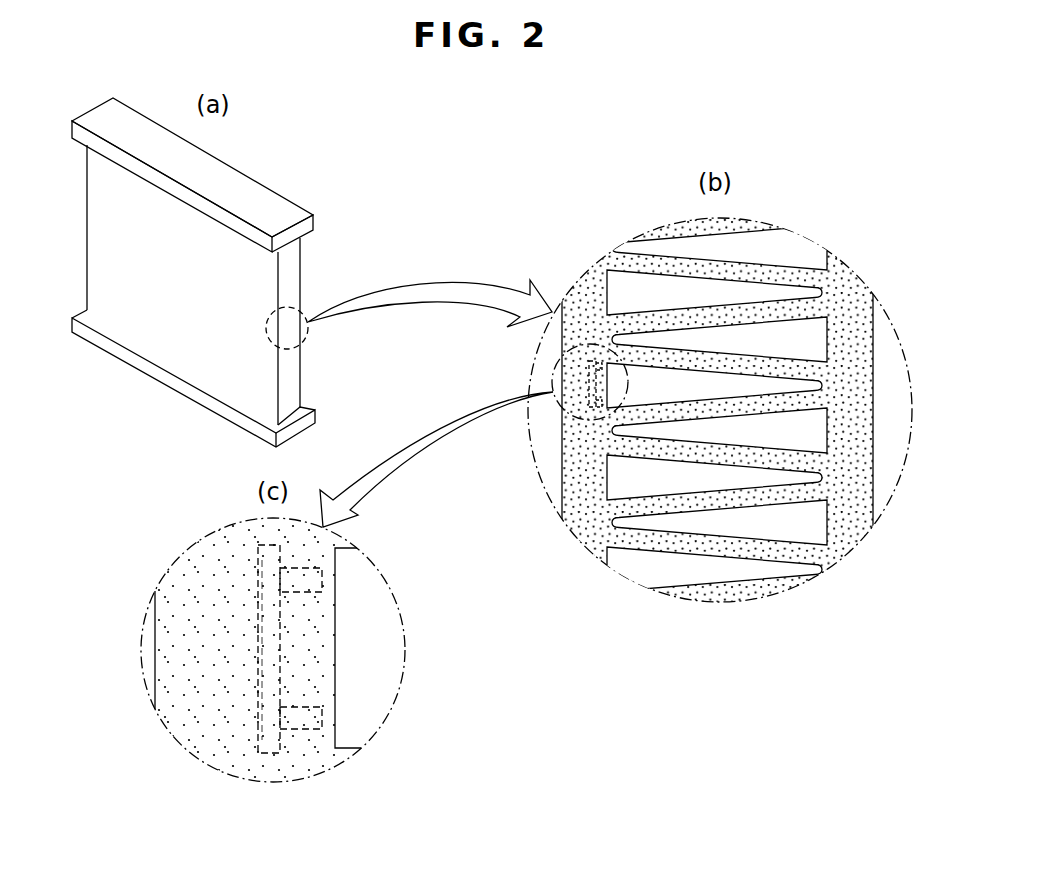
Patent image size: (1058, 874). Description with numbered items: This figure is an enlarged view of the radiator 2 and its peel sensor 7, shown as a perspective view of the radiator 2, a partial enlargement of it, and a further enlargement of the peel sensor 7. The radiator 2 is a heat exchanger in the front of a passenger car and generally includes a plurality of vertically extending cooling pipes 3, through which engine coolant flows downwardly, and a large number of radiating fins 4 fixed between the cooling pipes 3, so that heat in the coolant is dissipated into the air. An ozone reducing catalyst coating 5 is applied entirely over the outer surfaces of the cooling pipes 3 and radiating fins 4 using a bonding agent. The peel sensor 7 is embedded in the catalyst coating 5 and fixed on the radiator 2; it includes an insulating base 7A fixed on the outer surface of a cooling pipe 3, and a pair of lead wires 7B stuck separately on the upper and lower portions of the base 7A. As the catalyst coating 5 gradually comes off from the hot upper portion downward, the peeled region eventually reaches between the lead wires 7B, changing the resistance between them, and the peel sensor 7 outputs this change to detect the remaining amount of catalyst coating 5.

The radiator 2 is at (288, 282).
The cooling pipes 3 is at (873, 337).
The radiating fins 4 is at (662, 307).
The ozone reducing catalyst coating 5 is at (858, 453).
The peel sensor 7 is at (577, 347).
The base 7A is at (270, 663).
The lead wires 7B is at (320, 574).